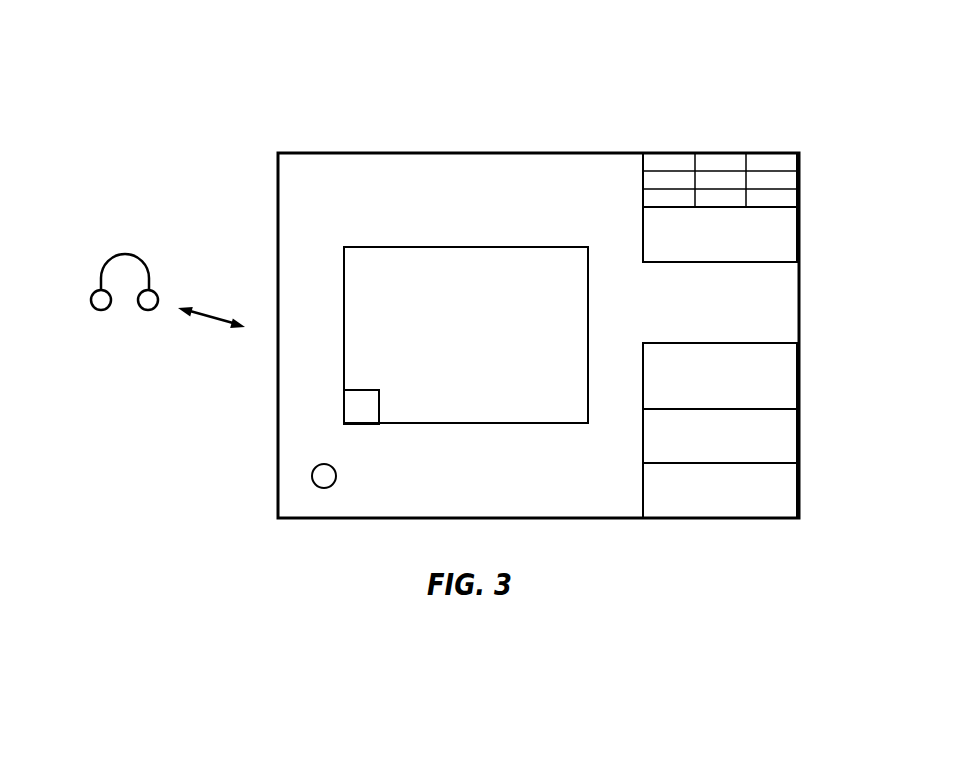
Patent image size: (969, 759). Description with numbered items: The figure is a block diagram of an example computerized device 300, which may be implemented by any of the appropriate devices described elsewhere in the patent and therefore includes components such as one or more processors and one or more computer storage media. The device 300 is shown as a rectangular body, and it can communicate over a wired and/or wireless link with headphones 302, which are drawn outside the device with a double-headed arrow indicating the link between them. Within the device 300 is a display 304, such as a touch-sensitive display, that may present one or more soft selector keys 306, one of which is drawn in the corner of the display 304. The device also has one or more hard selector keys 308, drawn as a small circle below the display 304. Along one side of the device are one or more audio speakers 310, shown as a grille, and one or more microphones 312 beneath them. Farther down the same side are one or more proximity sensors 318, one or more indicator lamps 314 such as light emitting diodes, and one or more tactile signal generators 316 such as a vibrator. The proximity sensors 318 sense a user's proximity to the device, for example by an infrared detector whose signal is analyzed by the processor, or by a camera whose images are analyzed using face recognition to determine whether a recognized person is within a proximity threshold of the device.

The computerized device 300 is at (606, 123).
The headphones 302 is at (125, 253).
The display 304 is at (500, 247).
The soft selector keys 306 is at (344, 407).
The hard selector keys 308 is at (312, 476).
The audio speakers 310 is at (799, 182).
The microphones 312 is at (799, 236).
The indicator lamps 314 is at (799, 436).
The tactile signal generators 316 is at (799, 491).
The proximity sensors 318 is at (799, 381).